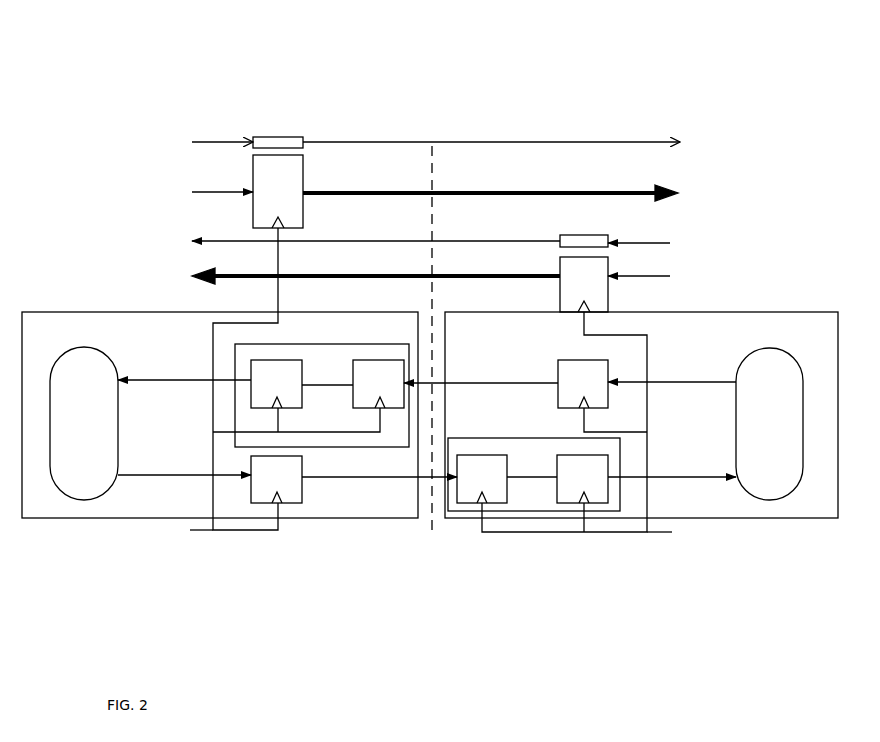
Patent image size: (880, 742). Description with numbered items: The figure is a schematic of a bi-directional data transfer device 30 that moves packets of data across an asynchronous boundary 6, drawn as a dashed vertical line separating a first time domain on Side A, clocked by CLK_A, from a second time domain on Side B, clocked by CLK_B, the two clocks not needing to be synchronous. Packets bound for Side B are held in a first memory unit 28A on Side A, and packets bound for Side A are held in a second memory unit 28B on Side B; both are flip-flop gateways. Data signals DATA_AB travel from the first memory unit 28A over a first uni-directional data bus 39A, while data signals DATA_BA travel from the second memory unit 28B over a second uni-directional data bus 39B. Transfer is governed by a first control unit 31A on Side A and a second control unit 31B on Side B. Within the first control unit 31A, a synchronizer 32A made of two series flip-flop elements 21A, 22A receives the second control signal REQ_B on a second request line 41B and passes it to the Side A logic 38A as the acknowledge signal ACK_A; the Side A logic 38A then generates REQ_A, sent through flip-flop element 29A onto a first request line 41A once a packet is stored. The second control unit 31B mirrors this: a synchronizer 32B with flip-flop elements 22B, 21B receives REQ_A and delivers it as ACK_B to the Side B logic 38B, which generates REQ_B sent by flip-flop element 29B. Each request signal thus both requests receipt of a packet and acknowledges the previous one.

The bi-directional data transfer device 30 is at (80, 152).
The asynchronous boundary 6 is at (449, 167).
The first memory unit 28A is at (248, 178).
The second memory unit 28B is at (612, 249).
The first uni-directional data bus 39A is at (406, 190).
The second uni-directional data bus 39B is at (506, 270).
The first control unit 31A is at (100, 308).
The second control unit 31B is at (770, 310).
The Side A logic 38A is at (88, 343).
The Side B logic 38B is at (766, 345).
The synchronizer 32A is at (352, 344).
The synchronizer 32B is at (540, 438).
The flip-flop element 21A is at (310, 402).
The flip-flop element 22A is at (345, 397).
The flip-flop element 29A is at (304, 463).
The flip-flop element 29B is at (590, 356).
The first request line 41A is at (390, 484).
The second request line 41B is at (505, 372).
The flip-flop element 21B is at (510, 481).
The flip-flop element 22B is at (554, 490).